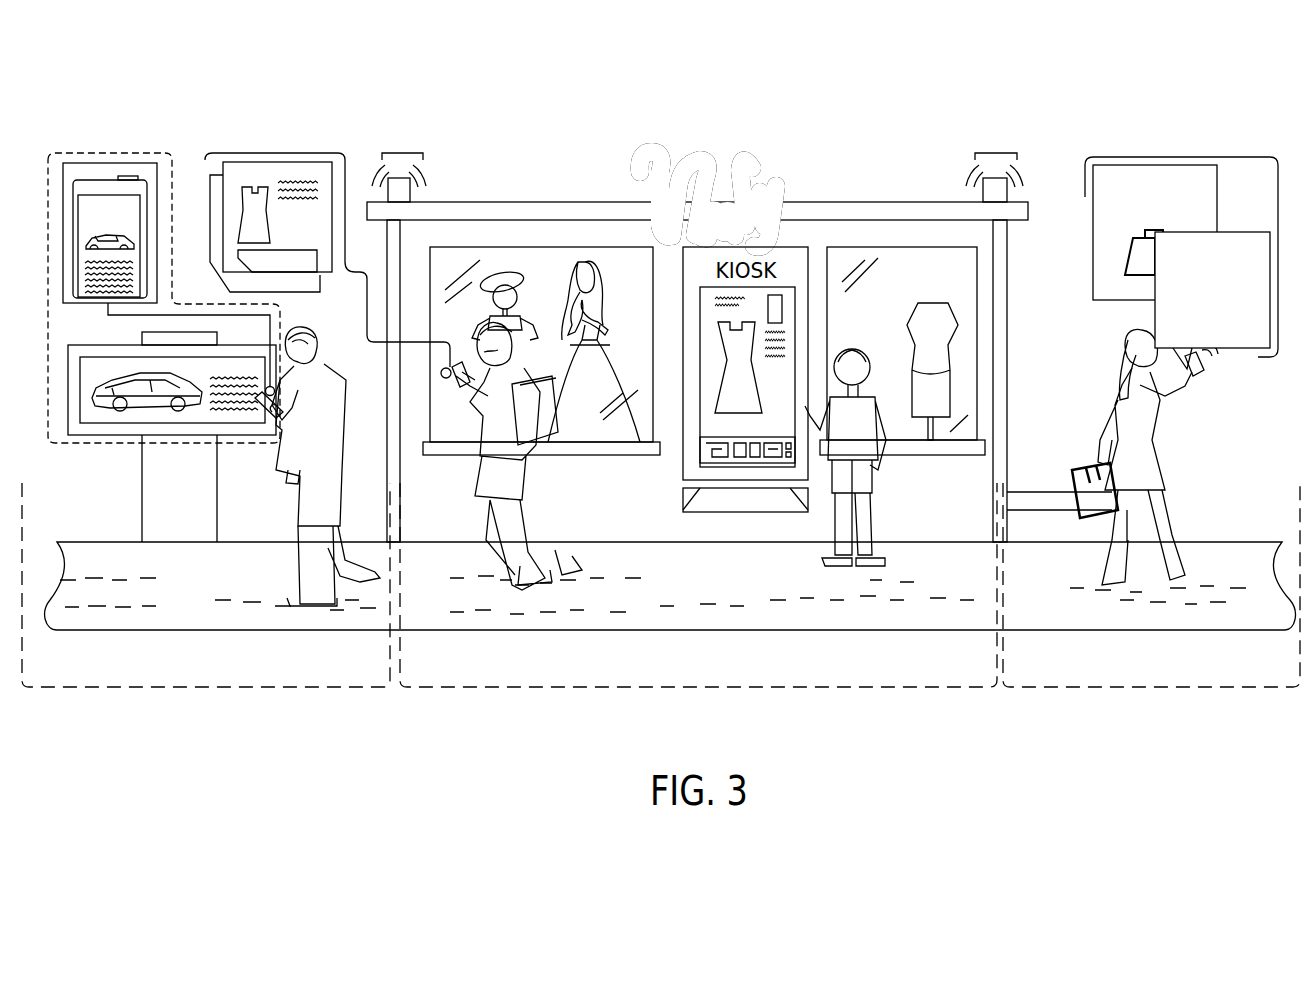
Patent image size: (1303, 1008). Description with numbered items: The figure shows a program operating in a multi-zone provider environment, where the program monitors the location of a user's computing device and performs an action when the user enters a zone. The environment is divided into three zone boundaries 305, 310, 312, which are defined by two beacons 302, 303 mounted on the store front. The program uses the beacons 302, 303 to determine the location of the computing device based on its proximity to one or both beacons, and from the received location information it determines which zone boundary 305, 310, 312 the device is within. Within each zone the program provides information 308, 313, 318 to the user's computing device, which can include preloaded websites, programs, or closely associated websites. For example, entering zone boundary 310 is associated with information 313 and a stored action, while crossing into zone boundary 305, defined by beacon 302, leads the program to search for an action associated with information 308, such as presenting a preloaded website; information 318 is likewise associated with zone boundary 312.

The beacon 302 is at (400, 153).
The beacon 303 is at (995, 153).
The zone boundary 305 is at (172, 687).
The information 308 is at (108, 153).
The zone boundary 310 is at (679, 687).
The zone boundary 312 is at (1122, 687).
The information 313 is at (275, 153).
The information 318 is at (1180, 153).